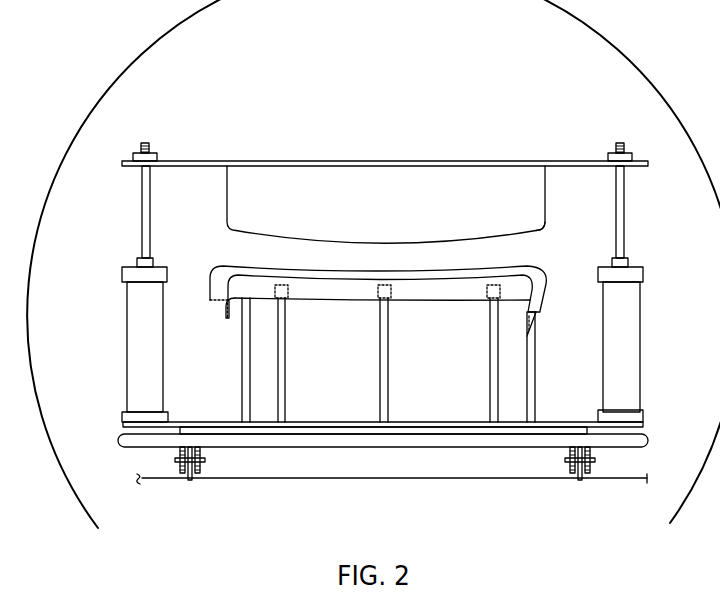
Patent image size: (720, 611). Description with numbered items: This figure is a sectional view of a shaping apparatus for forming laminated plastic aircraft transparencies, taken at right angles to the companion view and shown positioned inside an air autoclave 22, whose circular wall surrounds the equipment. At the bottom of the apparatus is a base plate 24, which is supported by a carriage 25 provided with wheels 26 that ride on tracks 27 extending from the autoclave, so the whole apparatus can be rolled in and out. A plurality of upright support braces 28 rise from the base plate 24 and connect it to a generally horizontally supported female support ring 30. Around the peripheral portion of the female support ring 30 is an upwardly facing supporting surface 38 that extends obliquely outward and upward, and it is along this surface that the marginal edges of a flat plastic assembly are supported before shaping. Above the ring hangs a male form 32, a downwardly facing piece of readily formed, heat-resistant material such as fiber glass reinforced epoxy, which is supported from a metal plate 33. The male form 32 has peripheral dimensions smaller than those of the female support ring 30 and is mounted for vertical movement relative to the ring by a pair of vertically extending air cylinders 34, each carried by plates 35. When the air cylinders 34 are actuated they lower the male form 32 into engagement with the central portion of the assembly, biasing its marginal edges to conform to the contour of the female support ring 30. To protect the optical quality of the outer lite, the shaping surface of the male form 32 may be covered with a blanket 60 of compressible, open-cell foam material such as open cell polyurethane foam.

The air autoclave 22 is at (77, 130).
The base plate 24 is at (421, 421).
The carriage 25 is at (121, 448).
The wheels 26 is at (204, 460).
The tracks 27 is at (190, 480).
The upright support braces 28 is at (380, 343).
The female support ring 30 is at (542, 320).
The male form 32 is at (398, 232).
The metal plate 33 is at (308, 160).
The air cylinders 34 is at (127, 357).
The plates 35 is at (123, 427).
The supporting surface 38 is at (549, 276).
The blanket 60 is at (546, 232).